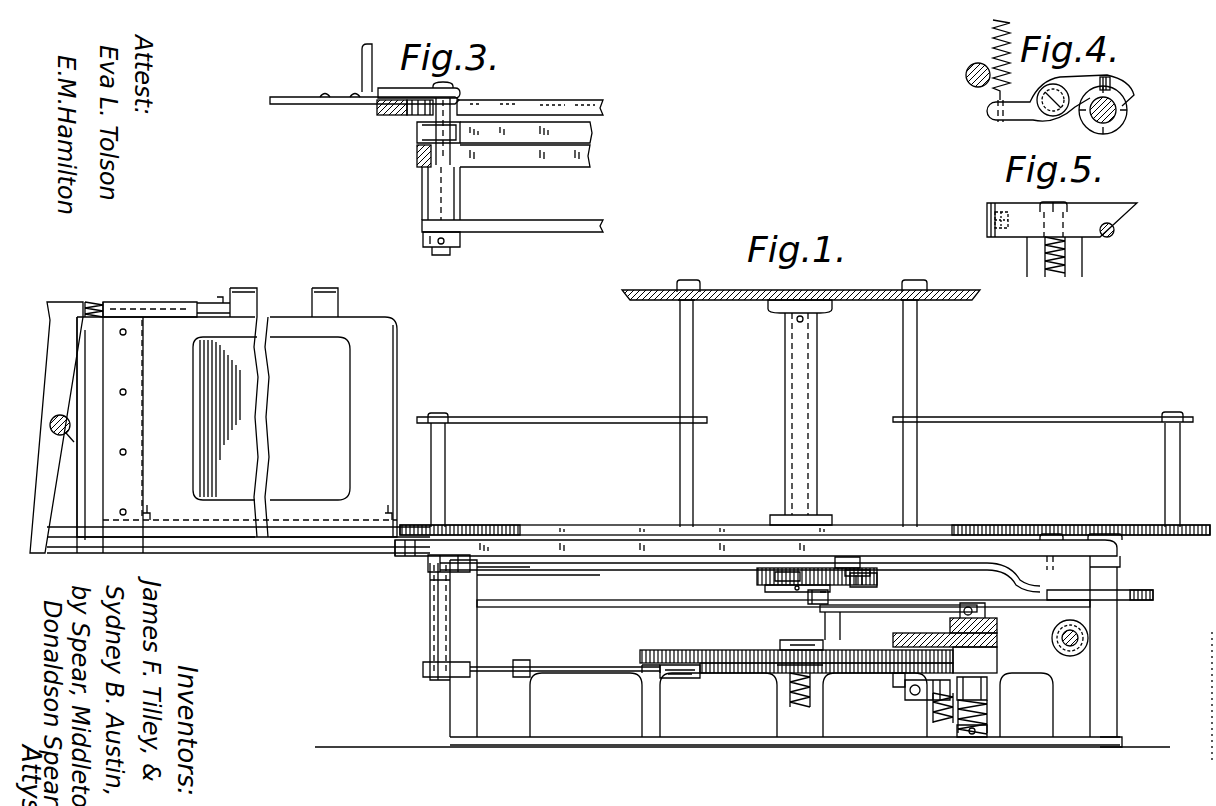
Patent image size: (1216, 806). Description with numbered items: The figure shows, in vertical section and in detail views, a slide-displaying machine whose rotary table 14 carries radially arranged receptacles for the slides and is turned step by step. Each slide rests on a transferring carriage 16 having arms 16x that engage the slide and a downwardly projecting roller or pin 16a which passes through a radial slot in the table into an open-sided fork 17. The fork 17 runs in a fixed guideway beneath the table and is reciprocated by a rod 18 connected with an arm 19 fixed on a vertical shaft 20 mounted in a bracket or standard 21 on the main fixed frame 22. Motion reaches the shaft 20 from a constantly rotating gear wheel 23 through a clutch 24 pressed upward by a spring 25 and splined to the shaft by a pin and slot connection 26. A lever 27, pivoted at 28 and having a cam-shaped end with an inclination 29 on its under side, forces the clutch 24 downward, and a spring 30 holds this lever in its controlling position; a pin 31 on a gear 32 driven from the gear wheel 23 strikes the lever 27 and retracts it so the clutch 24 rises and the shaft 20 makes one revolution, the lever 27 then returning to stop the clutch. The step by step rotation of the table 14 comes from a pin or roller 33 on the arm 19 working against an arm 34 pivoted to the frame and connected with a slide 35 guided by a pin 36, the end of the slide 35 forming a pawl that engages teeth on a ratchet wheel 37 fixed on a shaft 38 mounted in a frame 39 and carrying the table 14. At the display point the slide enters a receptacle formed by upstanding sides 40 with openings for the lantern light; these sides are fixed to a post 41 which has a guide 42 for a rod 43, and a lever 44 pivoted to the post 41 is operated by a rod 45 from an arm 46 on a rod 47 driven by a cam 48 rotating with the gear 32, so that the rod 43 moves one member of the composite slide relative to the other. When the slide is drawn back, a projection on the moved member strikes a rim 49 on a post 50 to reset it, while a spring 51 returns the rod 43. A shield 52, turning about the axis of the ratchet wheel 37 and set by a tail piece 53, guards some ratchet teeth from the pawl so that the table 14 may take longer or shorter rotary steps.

In FIG. 3, the rotary table 14 is at (390, 116).
In FIG. 1, the rotary table 14 is at (578, 528).
In FIG. 3, the transferring carriage 16 is at (300, 101).
In FIG. 1, the transferring carriage 16 is at (316, 523).
In FIG. 3, the arms 16x is at (362, 60).
In FIG. 1, the arms 16x is at (147, 516).
In FIG. 3, the roller or pin 16a is at (446, 125).
In FIG. 1, the roller or pin 16a is at (428, 550).
In FIG. 3, the fork 17 is at (424, 137).
In FIG. 1, the fork 17 is at (428, 570).
In FIG. 3, the rod 18 is at (538, 225).
In FIG. 1, the rod 18 is at (603, 603).
In FIG. 1, the arm 19 is at (870, 608).
In FIG. 4, the vertical shaft 20 is at (1117, 125).
In FIG. 1, the vertical shaft 20 is at (970, 606).
In FIG. 1, the bracket or standard 21 is at (990, 715).
In FIG. 1, the main fixed frame 22 is at (869, 743).
In FIG. 1, the gear wheel 23 is at (992, 664).
In FIG. 1, the clutch 24 is at (987, 692).
In FIG. 1, the spring 25 is at (968, 731).
In FIG. 4, the pin and slot connection 26 is at (1135, 97).
In FIG. 1, the pin and slot connection 26 is at (957, 680).
In FIG. 4, the lever 27 is at (988, 110).
In FIG. 5, the lever 27 is at (1027, 223).
In FIG. 1, the lever 27 is at (912, 698).
In FIG. 4, the pivot 28 is at (1053, 116).
In FIG. 5, the pivot 28 is at (1072, 248).
In FIG. 1, the pivot 28 is at (930, 715).
In FIG. 5, the inclination 29 is at (1117, 216).
In FIG. 4, the spring 30 is at (990, 43).
In FIG. 5, the spring 30 is at (1000, 205).
In FIG. 4, the pin 31 is at (966, 75).
In FIG. 1, the pin 31 is at (893, 683).
In FIG. 1, the gear 32 is at (755, 660).
In FIG. 1, the pin or roller 33 is at (812, 598).
In FIG. 1, the arm 34 is at (1132, 600).
In FIG. 1, the slide 35 is at (930, 569).
In FIG. 1, the pin 36 is at (870, 587).
In FIG. 1, the ratchet wheel 37 is at (770, 580).
In FIG. 1, the shaft 38 is at (795, 493).
In FIG. 3, the frame 39 is at (417, 153).
In FIG. 1, the frame 39 is at (846, 563).
In FIG. 1, the upstanding sides 40 is at (343, 387).
In FIG. 1, the post 41 is at (88, 428).
In FIG. 1, the guide 42 is at (135, 292).
In FIG. 1, the rod 43 is at (220, 300).
In FIG. 1, the lever 44 is at (60, 378).
In FIG. 1, the rod 45 is at (203, 540).
In FIG. 1, the arm 46 is at (440, 638).
In FIG. 1, the rod 47 is at (563, 645).
In FIG. 1, the cam 48 is at (692, 668).
In FIG. 1, the rim 49 is at (632, 297).
In FIG. 1, the post 50 is at (790, 347).
In FIG. 1, the spring 51 is at (92, 303).
In FIG. 1, the shield 52 is at (757, 572).
In FIG. 1, the tail piece 53 is at (856, 572).